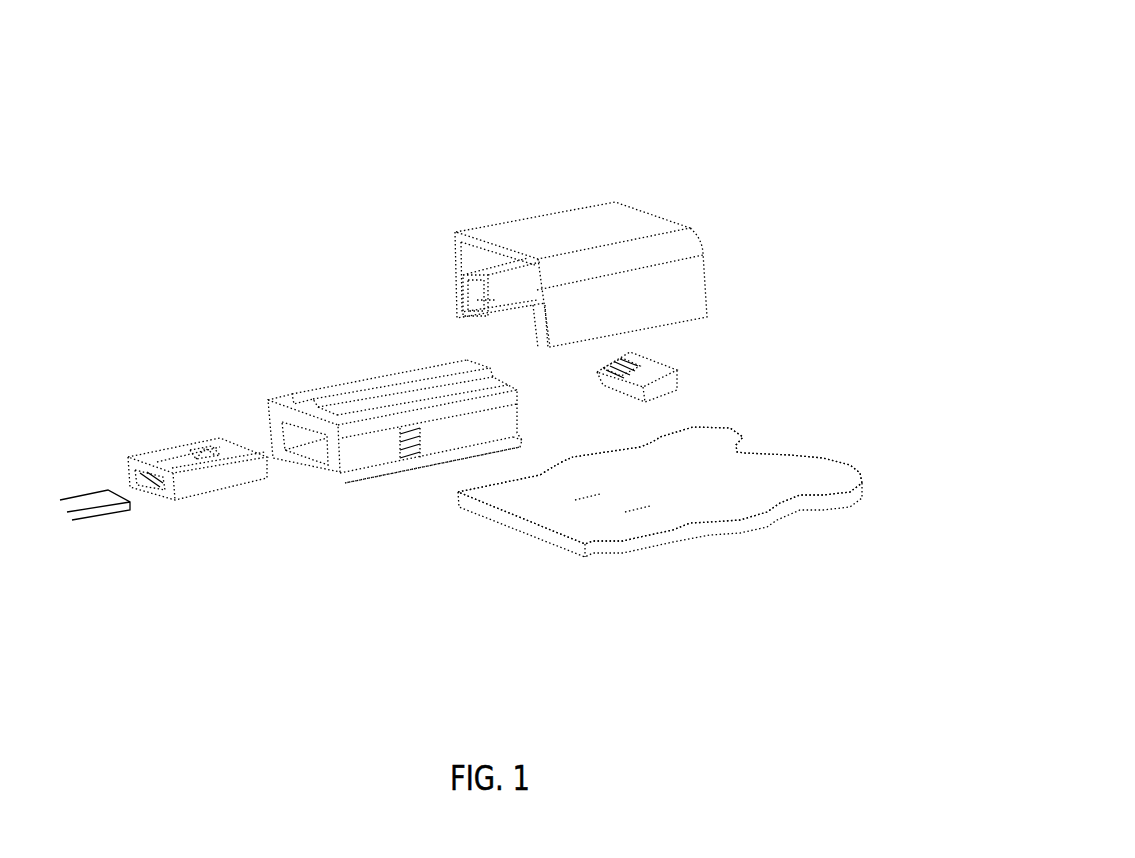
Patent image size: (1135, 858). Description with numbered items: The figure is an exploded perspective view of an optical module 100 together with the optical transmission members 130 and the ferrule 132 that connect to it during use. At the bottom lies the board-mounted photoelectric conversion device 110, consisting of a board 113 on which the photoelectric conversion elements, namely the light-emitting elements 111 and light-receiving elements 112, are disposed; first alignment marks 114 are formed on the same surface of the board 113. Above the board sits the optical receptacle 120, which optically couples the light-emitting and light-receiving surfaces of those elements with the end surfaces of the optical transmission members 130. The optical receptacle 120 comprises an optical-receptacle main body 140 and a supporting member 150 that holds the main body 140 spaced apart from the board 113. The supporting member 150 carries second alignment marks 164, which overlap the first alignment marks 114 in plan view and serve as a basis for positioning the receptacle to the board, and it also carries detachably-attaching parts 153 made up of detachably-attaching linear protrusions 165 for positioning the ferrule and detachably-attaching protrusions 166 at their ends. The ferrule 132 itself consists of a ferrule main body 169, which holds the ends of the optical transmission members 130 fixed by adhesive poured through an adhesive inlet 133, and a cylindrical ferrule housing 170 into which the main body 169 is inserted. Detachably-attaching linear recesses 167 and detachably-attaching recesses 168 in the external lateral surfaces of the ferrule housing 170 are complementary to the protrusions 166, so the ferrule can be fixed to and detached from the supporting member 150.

The optical module 100 is at (880, 66).
The photoelectric conversion device 110 is at (723, 587).
The light-emitting elements 111 is at (643, 487).
The light-receiving elements 112 is at (660, 485).
The board 113 is at (823, 500).
The first alignment marks 114 is at (640, 507).
The optical receptacle 120 is at (755, 150).
The optical transmission members 130 is at (102, 508).
The ferrule 132 is at (298, 323).
The adhesive inlet 133 is at (180, 453).
The optical-receptacle main body 140 is at (677, 383).
The supporting member 150 is at (678, 240).
The detachably-attaching parts 153 is at (425, 185).
The second alignment marks 164 is at (617, 237).
The detachably-attaching linear protrusions 165 is at (470, 312).
The detachably-attaching protrusions 166 is at (470, 288).
The detachably-attaching linear recesses 167 is at (338, 468).
The detachably-attaching recesses 168 is at (407, 453).
The ferrule main body 169 is at (222, 447).
The ferrule housing 170 is at (338, 422).